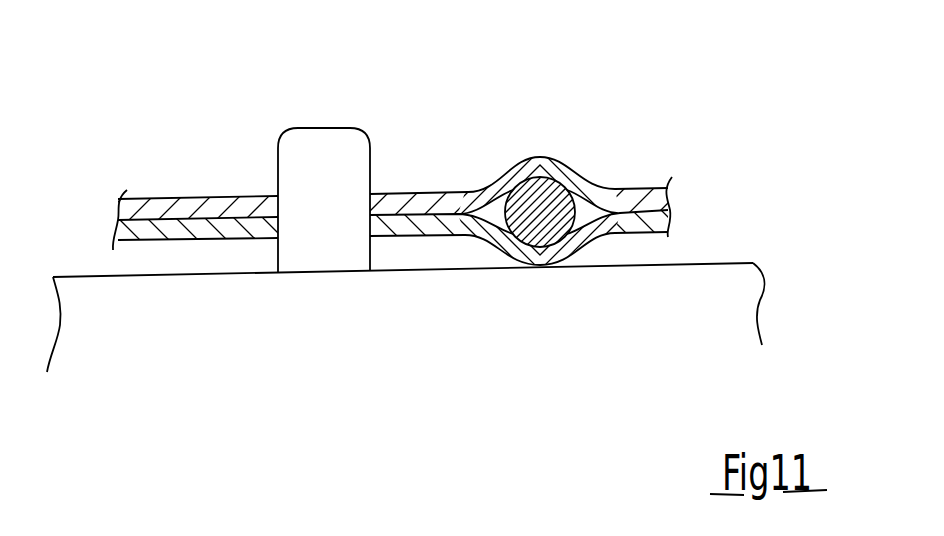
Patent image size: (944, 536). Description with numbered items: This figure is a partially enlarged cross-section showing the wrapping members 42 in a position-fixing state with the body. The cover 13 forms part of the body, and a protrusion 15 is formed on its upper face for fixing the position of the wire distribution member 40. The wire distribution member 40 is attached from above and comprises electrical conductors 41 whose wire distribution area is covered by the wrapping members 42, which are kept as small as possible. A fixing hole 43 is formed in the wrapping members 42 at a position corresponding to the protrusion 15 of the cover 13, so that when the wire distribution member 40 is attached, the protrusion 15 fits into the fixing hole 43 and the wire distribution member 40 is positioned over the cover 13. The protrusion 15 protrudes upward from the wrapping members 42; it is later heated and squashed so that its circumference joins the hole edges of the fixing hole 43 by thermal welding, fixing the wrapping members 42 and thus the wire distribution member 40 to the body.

The cover 13 is at (713, 283).
The protrusion 15 is at (308, 146).
The wire distribution member 40 is at (650, 145).
The electrical conductor 41 is at (534, 210).
The wrapping member 42 is at (448, 223).
The fixing hole 43 is at (262, 228).